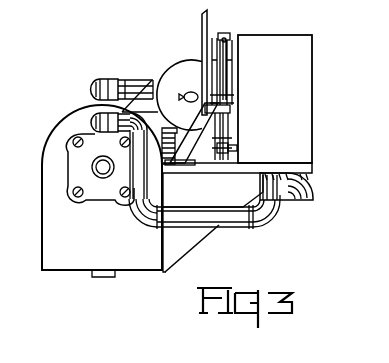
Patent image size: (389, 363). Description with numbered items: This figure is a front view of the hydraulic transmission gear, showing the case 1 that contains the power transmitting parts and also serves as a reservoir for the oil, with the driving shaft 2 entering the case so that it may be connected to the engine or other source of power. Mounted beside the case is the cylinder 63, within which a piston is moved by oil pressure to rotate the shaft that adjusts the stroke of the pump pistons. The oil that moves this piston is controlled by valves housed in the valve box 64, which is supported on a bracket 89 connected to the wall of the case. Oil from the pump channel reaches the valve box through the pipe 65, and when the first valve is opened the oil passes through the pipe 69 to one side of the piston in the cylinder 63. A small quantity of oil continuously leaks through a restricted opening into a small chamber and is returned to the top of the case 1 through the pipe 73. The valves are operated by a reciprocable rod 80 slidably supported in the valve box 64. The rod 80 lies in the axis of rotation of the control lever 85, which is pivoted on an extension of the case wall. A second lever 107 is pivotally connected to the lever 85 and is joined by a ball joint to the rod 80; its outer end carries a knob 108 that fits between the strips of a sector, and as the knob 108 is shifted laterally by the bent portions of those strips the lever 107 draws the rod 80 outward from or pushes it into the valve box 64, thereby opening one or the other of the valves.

The case 1 is at (53, 200).
The driving shaft 2 is at (92, 167).
The cylinder 63 is at (178, 72).
The valve box 64 is at (297, 104).
The pipe 65 is at (251, 228).
The pipe 69 is at (355, 0).
The pipe 73 is at (137, 88).
The reciprocable rod 80 is at (233, 150).
The lever 85 is at (203, 28).
The bracket 89 is at (193, 235).
The lever 107 is at (222, 120).
The knob 108 is at (222, 43).